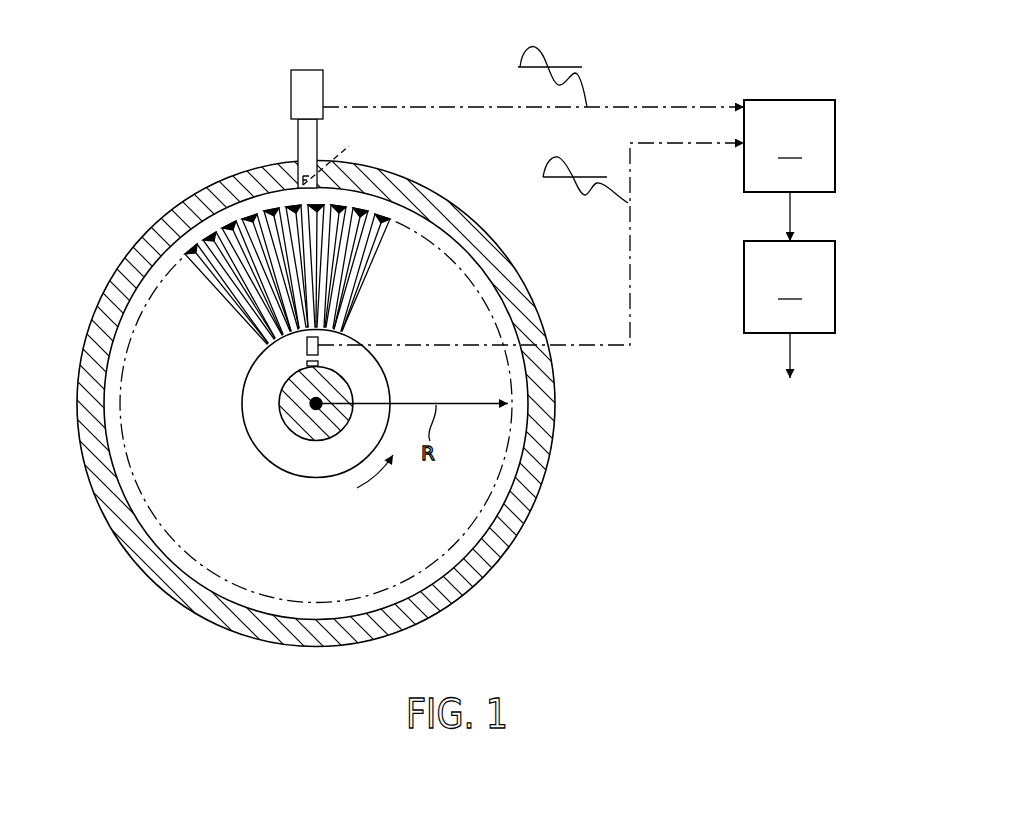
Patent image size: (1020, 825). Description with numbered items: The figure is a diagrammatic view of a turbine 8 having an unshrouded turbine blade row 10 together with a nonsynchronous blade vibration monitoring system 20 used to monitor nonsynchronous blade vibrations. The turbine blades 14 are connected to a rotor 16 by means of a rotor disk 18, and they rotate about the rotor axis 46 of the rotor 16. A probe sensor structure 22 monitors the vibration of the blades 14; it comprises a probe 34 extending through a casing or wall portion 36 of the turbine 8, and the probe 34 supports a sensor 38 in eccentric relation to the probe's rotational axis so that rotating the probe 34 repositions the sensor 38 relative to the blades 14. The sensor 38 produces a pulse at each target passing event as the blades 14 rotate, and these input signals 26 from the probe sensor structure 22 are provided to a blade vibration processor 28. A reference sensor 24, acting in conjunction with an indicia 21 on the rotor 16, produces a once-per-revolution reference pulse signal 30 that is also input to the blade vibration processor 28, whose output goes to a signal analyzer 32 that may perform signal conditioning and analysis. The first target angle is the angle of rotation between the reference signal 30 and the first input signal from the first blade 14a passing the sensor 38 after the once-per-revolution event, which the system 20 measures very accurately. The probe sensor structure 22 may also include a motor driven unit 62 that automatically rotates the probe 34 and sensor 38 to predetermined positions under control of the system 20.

The turbine 8 is at (81, 344).
The unshrouded turbine blade row 10 is at (172, 266).
The turbine blades 14 is at (215, 278).
The first blade 14a is at (315, 217).
The rotor 16 is at (285, 410).
The rotor disk 18 is at (285, 477).
The blade vibration monitoring system 20 is at (861, 224).
The indicia 21 is at (318, 362).
The probe sensor structure 22 is at (296, 163).
The reference sensor 24 is at (303, 350).
The input signals 26 is at (522, 58).
The blade vibration processor 28 is at (789, 146).
The once-per-revolution reference pulse signal 30 is at (545, 165).
The signal analyzer 32 is at (789, 287).
The probe 34 is at (298, 128).
The casing or wall portion 36 is at (118, 272).
The sensor 38 is at (349, 146).
The rotor axis 46 is at (318, 410).
The motor driven unit 62 is at (291, 83).